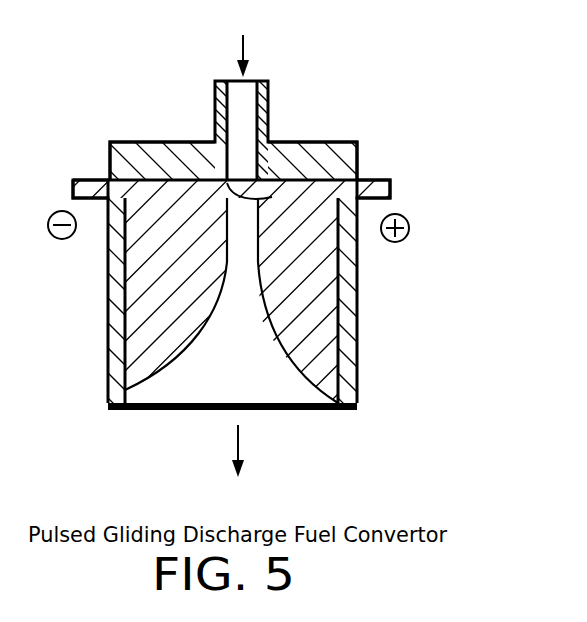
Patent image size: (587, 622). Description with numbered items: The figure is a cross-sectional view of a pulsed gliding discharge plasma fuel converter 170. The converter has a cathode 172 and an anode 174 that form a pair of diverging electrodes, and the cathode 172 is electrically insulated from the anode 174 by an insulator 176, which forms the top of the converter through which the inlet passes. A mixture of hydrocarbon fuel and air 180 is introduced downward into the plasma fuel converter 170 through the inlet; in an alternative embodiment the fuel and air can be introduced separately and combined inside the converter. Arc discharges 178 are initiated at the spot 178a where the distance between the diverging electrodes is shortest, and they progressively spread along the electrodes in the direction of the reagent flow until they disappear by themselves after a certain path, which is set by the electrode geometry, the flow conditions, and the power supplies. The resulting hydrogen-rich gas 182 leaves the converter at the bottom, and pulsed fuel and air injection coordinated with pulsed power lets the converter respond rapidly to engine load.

The plasma fuel converter 170 is at (120, 37).
The cathode 172 is at (82, 180).
The anode 174 is at (383, 182).
The insulator 176 is at (160, 142).
The arc discharges 178 is at (192, 336).
The discharge initiation spot 178a is at (272, 197).
The mixture of hydrocarbon fuel and air 180 is at (247, 53).
The H2-rich gas outlet 182 is at (242, 443).